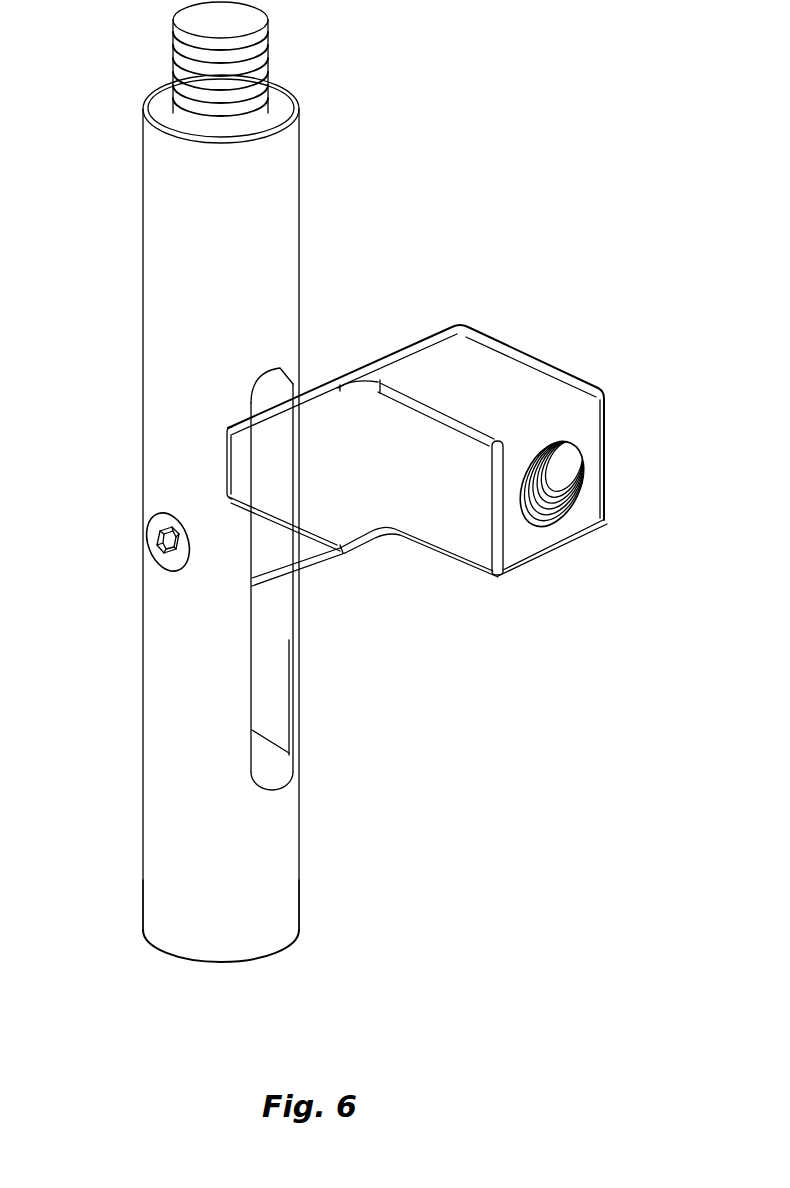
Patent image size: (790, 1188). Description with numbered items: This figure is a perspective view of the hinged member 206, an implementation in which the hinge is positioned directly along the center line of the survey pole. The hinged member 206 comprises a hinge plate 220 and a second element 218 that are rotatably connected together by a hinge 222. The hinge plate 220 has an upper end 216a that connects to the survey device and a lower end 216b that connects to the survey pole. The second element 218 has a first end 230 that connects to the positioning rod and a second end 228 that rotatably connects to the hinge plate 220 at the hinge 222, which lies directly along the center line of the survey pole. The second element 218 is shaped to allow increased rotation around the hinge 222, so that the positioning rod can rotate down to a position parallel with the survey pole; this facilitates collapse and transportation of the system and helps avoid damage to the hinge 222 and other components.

The hinged member 206 is at (458, 106).
The upper end 216a is at (145, 150).
The lower end 216b is at (150, 880).
The second element 218 is at (464, 363).
The hinge plate 220 is at (150, 668).
The hinge 222 is at (158, 541).
The second end 228 is at (278, 543).
The first end 230 is at (583, 462).